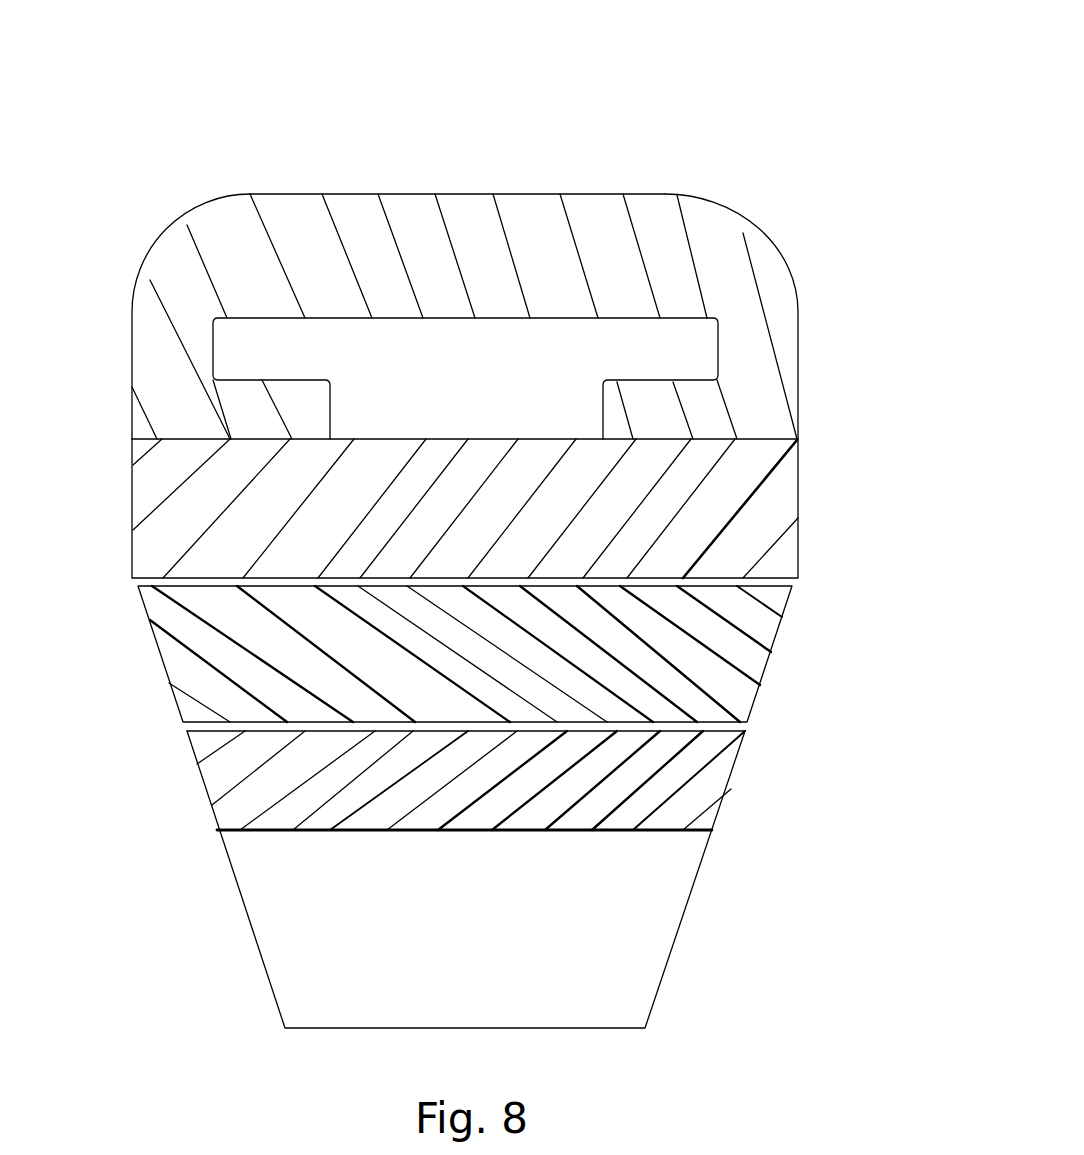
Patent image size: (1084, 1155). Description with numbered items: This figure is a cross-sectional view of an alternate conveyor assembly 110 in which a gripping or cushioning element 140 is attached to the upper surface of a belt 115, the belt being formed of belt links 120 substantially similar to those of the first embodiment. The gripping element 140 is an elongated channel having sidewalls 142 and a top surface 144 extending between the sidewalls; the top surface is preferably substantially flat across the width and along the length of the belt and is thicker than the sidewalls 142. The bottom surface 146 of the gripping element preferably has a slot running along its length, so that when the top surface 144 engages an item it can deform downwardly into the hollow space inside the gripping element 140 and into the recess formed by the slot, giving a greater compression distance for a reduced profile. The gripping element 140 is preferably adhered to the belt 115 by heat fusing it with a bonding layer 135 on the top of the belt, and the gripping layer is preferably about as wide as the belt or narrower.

The conveyor assembly 110 is at (662, 143).
The belt 115 is at (766, 684).
The belt links 120 is at (163, 632).
The bonding layer 135 is at (778, 555).
The gripping element 140 is at (482, 194).
The sidewalls 142 is at (353, 194).
The top surface 144 is at (762, 372).
The bottom surface 146 is at (642, 397).